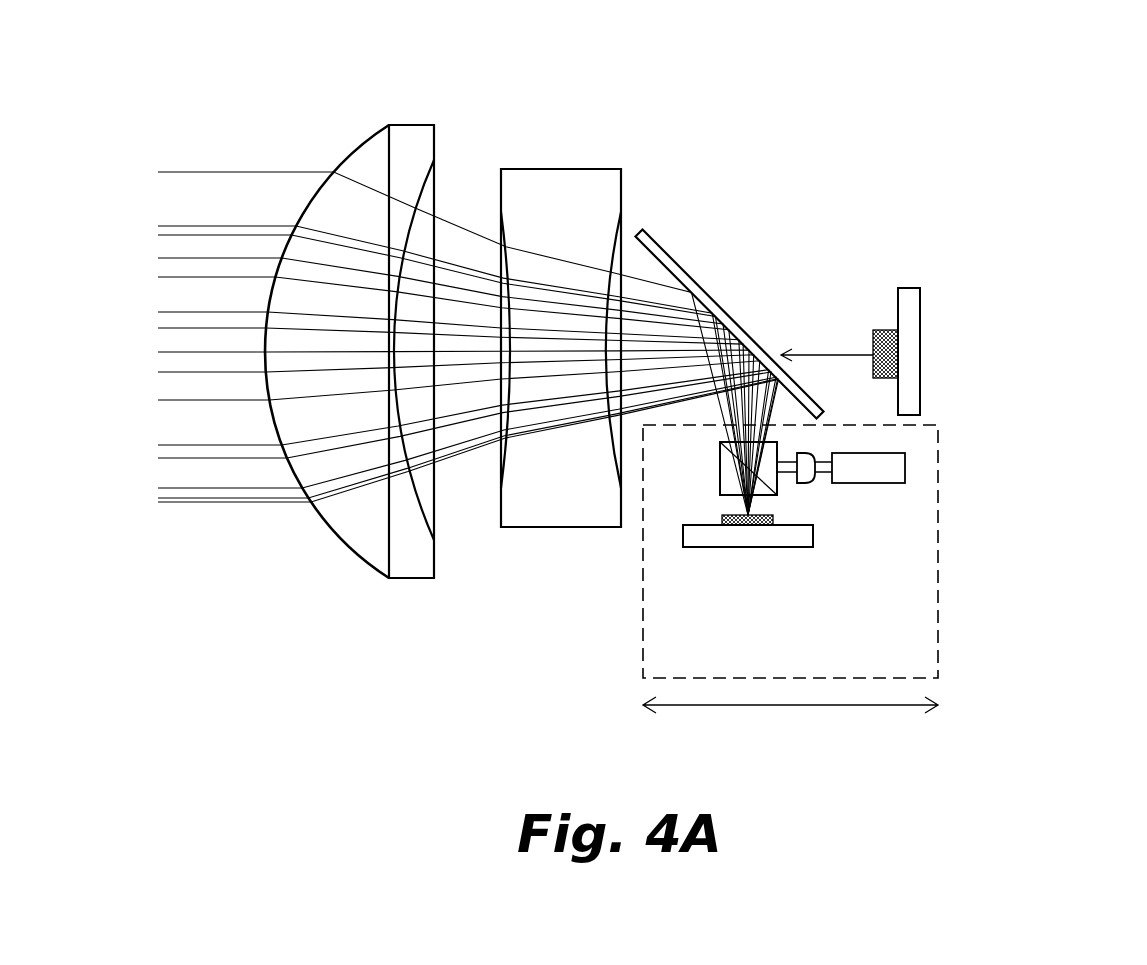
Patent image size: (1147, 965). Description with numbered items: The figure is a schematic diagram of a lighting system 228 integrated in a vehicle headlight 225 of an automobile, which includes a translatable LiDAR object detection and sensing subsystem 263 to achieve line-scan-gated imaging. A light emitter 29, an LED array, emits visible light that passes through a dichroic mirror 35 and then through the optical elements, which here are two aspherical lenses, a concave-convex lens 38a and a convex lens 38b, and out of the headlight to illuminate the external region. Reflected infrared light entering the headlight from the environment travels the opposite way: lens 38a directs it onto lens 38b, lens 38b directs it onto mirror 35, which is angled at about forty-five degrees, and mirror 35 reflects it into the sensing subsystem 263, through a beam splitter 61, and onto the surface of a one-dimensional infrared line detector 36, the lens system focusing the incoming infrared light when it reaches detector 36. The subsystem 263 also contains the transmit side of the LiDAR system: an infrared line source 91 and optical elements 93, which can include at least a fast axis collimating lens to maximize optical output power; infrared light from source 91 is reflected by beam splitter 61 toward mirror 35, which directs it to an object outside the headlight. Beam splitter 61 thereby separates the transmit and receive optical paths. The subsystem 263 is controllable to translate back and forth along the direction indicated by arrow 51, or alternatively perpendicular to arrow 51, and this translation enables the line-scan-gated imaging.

The vehicle headlight 225 is at (396, 64).
The lighting system 228 is at (727, 152).
The concave-convex lens 38a is at (366, 158).
The convex lens 38b is at (573, 167).
The dichroic mirror 35 is at (684, 269).
The light emitter 29 is at (921, 305).
The LiDAR object detection and sensing subsystem 263 is at (940, 600).
The beam splitter 61 is at (717, 476).
The line detector 36 is at (772, 548).
The optical elements 93 is at (807, 485).
The line source 91 is at (867, 485).
The arrow 51 is at (818, 707).